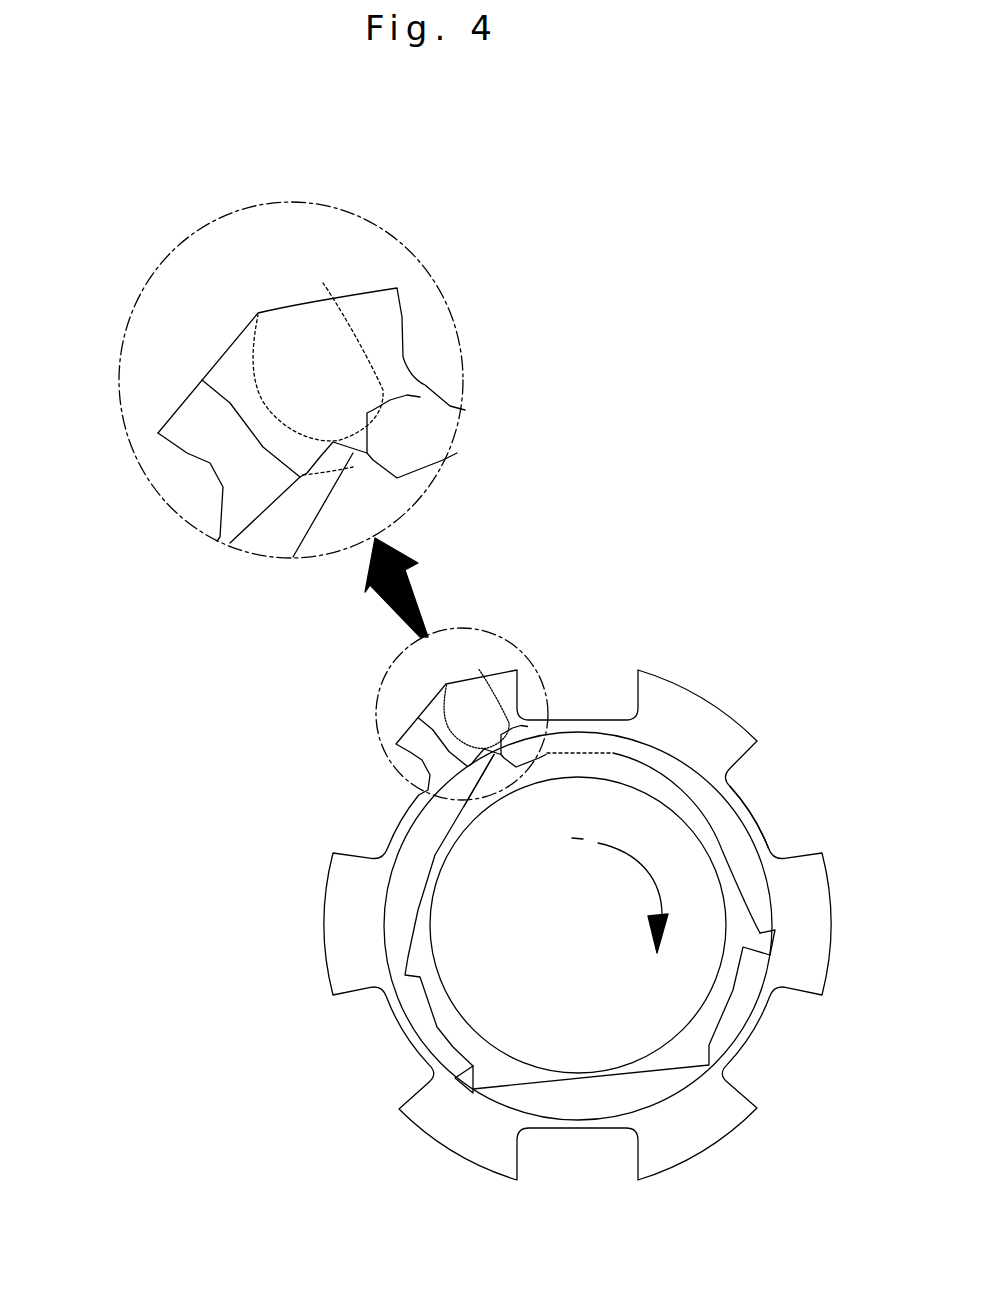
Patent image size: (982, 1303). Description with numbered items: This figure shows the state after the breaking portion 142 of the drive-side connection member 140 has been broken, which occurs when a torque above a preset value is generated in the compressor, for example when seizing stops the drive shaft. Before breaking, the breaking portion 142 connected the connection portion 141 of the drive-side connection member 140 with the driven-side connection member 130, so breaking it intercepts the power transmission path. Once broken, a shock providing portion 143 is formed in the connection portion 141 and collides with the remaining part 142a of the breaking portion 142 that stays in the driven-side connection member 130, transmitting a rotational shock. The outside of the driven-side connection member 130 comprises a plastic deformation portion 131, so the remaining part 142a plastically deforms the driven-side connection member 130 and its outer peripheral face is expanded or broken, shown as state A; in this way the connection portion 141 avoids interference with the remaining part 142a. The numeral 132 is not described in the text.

The driven-side connection member 130 is at (443, 1153).
The plastic deformation portion 131 is at (254, 312).
The gear body 132 is at (732, 770).
The drive-side connection member 140 is at (650, 1040).
The connection portion 141 is at (577, 765).
The breaking portion 142 is at (403, 421).
The remaining part of the breaking portion 142a is at (323, 283).
The shock providing portion 143 is at (300, 477).